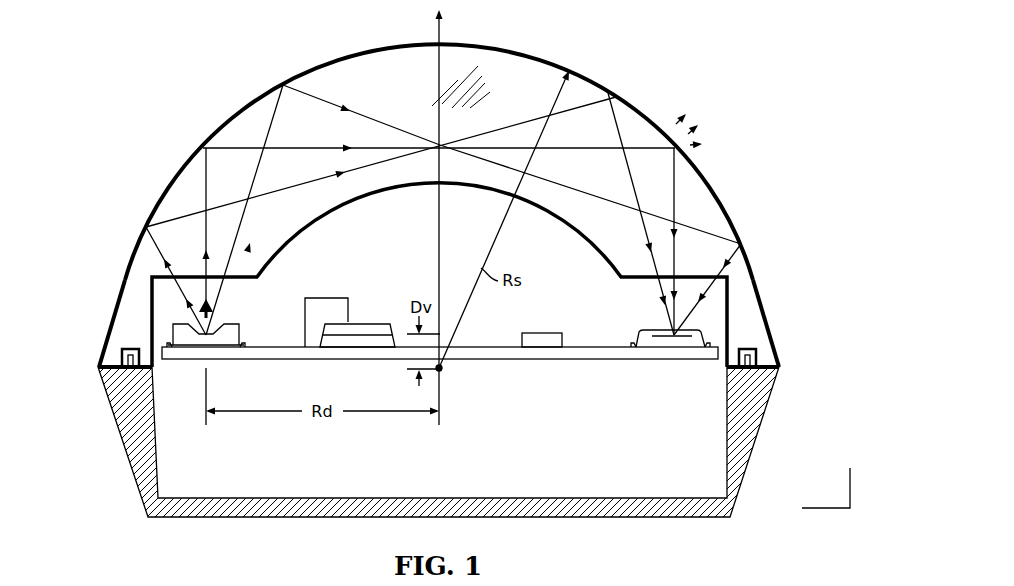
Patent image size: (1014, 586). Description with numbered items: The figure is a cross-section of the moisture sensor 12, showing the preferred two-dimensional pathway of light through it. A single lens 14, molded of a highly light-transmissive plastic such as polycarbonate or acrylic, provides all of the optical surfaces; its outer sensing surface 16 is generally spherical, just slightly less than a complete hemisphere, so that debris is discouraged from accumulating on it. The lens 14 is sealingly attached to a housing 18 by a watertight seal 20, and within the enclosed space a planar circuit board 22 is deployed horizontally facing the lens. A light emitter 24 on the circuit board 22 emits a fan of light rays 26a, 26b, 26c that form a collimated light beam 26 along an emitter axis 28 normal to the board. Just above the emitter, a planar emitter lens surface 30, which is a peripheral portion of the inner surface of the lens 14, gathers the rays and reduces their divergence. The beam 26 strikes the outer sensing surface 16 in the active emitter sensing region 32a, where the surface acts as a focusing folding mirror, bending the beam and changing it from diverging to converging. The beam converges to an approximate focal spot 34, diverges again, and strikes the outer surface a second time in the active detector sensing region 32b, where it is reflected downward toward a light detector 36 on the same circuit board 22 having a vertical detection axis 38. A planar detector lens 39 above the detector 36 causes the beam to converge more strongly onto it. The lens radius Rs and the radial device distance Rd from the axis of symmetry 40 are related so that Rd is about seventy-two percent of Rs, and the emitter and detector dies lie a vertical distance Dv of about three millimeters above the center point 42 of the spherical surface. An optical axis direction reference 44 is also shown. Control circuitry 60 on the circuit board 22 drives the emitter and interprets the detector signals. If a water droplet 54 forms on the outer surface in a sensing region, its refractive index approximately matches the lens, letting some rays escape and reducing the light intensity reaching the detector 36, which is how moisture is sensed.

The moisture sensor 12 is at (118, 97).
The lens 14 is at (509, 93).
The outer sensing surface 16 is at (342, 60).
The housing 18 is at (768, 424).
The watertight seal 20 is at (757, 346).
The planar circuit board 22 is at (622, 362).
The light emitter 24 is at (247, 336).
The collimated light beam 26 is at (265, 248).
The light ray 26a is at (189, 304).
The light ray 26b is at (205, 284).
The light ray 26c is at (232, 292).
The emitter axis 28 is at (222, 319).
The planar emitter lens surface 30 is at (253, 279).
The active emitter sensing region 32a is at (176, 160).
The active detector sensing region 32b is at (718, 189).
The focal spot 34 is at (435, 143).
The light detector 36 is at (655, 330).
The vertical detection axis 38 is at (672, 322).
The detector lens 39 is at (705, 278).
The axis of symmetry 40 is at (441, 32).
The center point 42 is at (445, 371).
The optical axis direction reference 44 is at (858, 497).
The water droplet 54 is at (676, 136).
The control circuitry 60 is at (362, 307).